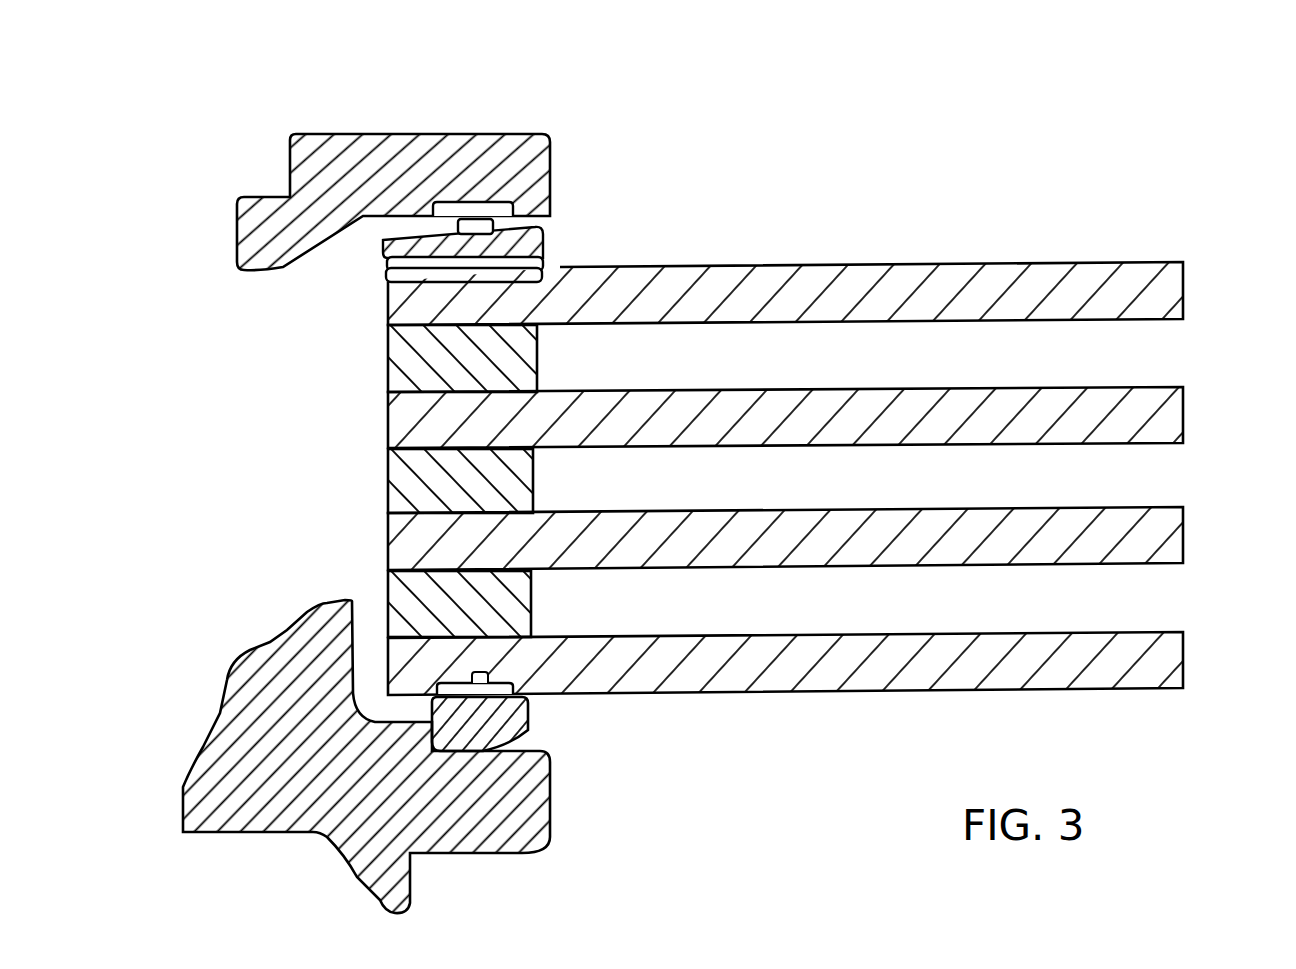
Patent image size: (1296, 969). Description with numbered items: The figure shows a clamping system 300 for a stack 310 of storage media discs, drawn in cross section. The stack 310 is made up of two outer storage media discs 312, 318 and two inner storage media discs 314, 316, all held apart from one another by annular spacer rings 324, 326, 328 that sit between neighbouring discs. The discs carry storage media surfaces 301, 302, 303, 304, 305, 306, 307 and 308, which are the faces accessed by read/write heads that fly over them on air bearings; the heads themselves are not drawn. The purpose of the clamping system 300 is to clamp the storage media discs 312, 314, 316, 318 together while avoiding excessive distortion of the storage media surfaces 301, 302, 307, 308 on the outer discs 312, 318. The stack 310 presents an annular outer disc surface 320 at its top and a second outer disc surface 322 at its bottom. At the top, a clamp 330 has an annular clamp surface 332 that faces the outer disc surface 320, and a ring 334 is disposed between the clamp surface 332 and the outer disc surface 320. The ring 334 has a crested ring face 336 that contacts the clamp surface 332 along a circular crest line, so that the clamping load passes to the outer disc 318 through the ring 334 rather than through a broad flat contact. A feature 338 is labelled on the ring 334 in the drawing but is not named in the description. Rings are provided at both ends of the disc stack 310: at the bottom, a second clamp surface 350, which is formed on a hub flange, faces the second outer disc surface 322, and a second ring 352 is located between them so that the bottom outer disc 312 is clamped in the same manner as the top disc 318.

The clamping system 300 is at (427, 77).
The stack of storage media discs 310 is at (829, 157).
The clamp 330 is at (552, 143).
The annular clamp surface 332 is at (472, 201).
The ring 334 is at (546, 238).
The crested ring face 336 is at (546, 245).
The wedge ring groove 338 is at (470, 237).
The annular outer disc surface 320 is at (467, 282).
The outer storage media disc 318 is at (1043, 305).
The inner storage media disc 316 is at (1007, 423).
The inner storage media disc 314 is at (958, 551).
The outer storage media disc 312 is at (906, 675).
The annular spacer ring 328 is at (537, 362).
The annular spacer ring 326 is at (534, 484).
The annular spacer ring 324 is at (532, 606).
The second outer disc surface 322 is at (477, 668).
The storage media surface 308 is at (1128, 262).
The storage media surface 307 is at (1135, 319).
The storage media surface 306 is at (1137, 387).
The storage media surface 305 is at (1133, 443).
The storage media surface 304 is at (1133, 507).
The storage media surface 303 is at (1133, 563).
The storage media surface 302 is at (1133, 632).
The storage media surface 301 is at (1133, 688).
The second clamp surface 350 is at (480, 753).
The second ring 352 is at (528, 737).